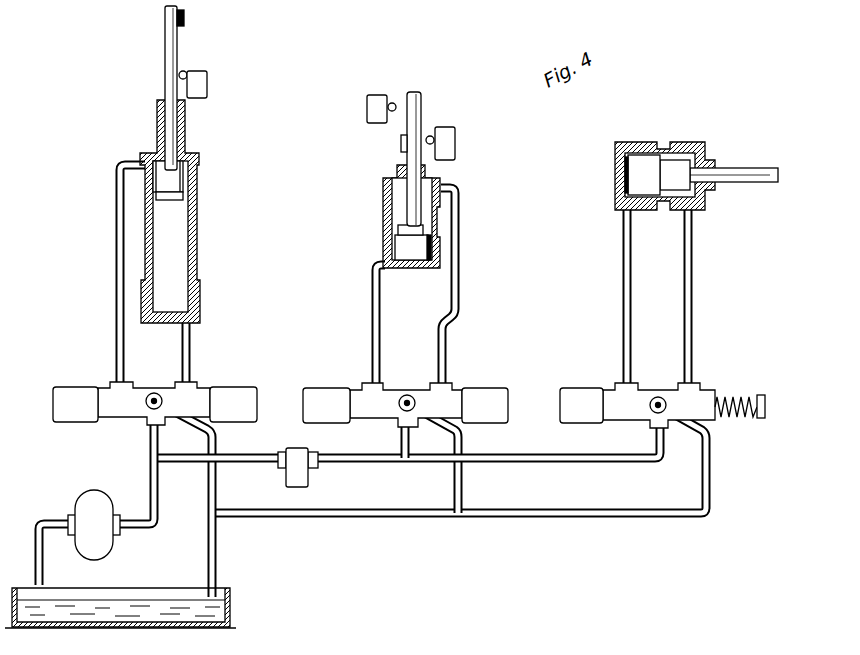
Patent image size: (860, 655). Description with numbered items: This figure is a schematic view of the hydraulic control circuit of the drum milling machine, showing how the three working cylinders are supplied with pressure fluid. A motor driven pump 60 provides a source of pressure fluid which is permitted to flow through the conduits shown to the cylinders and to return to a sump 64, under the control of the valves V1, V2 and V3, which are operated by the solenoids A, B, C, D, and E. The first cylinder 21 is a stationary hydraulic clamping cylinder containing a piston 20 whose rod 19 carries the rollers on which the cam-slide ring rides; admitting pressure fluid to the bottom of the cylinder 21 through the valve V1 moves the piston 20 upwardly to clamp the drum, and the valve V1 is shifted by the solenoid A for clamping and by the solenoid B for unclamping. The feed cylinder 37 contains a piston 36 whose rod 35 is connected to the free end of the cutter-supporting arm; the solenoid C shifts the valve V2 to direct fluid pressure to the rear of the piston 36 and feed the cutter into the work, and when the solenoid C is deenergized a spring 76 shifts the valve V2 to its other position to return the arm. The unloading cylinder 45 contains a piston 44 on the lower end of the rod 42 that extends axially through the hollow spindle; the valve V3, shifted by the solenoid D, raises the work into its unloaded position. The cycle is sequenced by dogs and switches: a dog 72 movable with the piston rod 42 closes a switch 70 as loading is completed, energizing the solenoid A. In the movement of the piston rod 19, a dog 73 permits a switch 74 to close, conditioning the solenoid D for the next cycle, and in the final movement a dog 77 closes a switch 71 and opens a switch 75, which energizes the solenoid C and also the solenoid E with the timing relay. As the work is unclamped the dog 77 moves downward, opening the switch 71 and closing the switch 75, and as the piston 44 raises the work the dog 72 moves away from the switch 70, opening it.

The piston rod 19 is at (410, 196).
The piston 20 is at (397, 243).
The hydraulic cylinder 21 is at (438, 252).
The rod 35 is at (738, 172).
The piston 36 is at (643, 156).
The cylinder 37 is at (617, 148).
The rod 42 is at (167, 68).
The piston 44 is at (193, 172).
The cylinder 45 is at (197, 237).
The motor driven pump 60 is at (90, 496).
The reservoir tank 64 is at (178, 621).
The switch 70 is at (207, 78).
The switch 71 is at (367, 100).
The dog 72 is at (184, 18).
The dog 73 is at (431, 136).
The switch 74 is at (455, 140).
The switch 75 is at (367, 114).
The spring 76 is at (742, 400).
The dog 77 is at (401, 145).
The solenoid A is at (325, 396).
The solenoid B is at (487, 396).
The solenoid C is at (585, 398).
The solenoid D is at (236, 395).
The solenoid E is at (73, 393).
The valve V1 is at (386, 412).
The valve V2 is at (631, 412).
The valve V3 is at (133, 412).